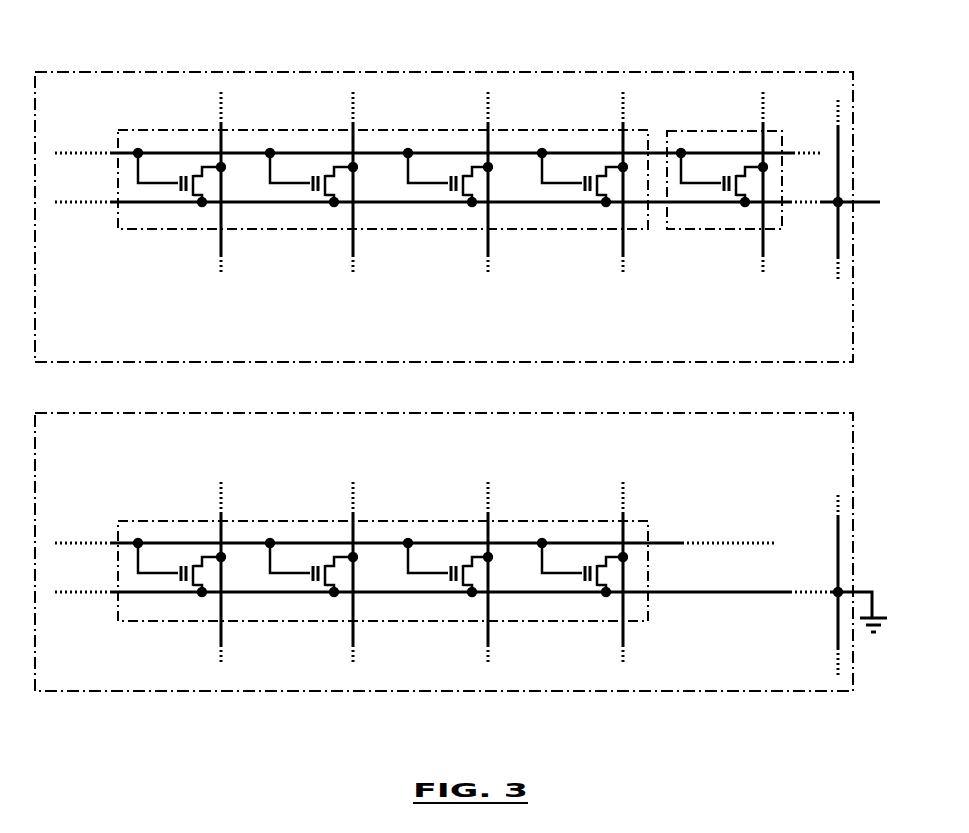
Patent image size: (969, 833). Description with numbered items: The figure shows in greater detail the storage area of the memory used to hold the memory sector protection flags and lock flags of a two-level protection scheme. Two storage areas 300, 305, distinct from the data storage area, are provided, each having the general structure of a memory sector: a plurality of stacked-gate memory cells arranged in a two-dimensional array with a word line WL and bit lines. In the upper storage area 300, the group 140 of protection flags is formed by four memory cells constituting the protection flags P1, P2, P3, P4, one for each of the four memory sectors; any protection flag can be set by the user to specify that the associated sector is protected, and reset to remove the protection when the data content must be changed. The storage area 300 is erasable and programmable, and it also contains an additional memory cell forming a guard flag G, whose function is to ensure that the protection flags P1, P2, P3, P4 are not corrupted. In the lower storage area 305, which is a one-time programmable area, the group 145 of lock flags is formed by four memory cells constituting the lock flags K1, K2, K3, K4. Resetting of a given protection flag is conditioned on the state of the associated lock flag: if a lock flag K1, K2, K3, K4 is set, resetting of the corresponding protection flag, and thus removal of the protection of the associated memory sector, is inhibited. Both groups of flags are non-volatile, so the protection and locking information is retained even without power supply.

The storage area 300 is at (444, 184).
The storage area 305 is at (444, 589).
The group of protection flags 140 is at (418, 230).
The group of lock flags 145 is at (648, 520).
The word line WL is at (92, 150).
The protection flag P1 is at (178, 193).
The protection flag P2 is at (325, 195).
The protection flag P3 is at (462, 173).
The protection flag P4 is at (603, 172).
The guard flag G is at (725, 190).
The lock flag K1 is at (178, 583).
The lock flag K2 is at (325, 585).
The lock flag K3 is at (462, 563).
The lock flag K4 is at (603, 563).